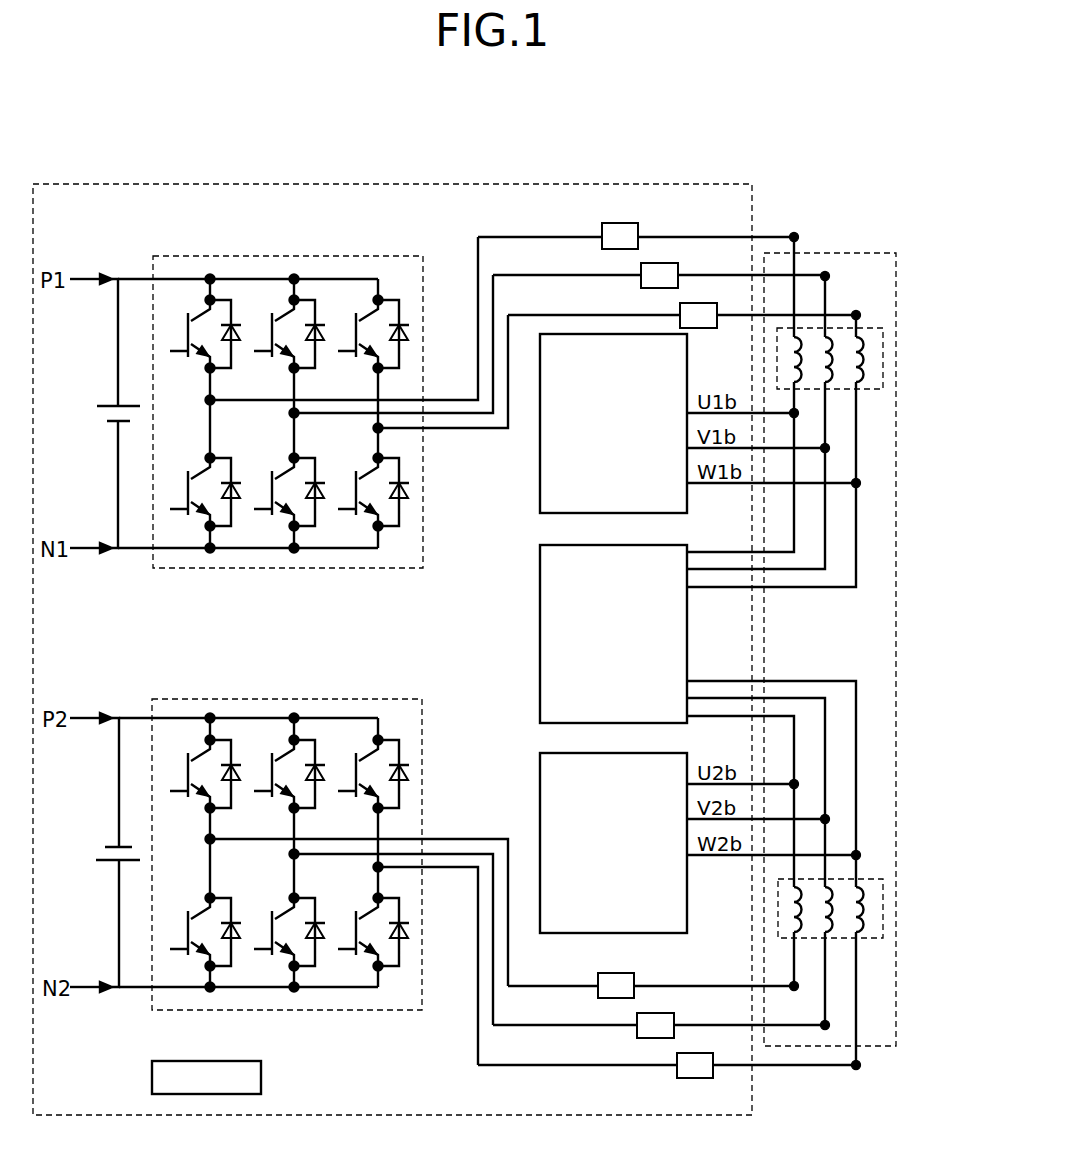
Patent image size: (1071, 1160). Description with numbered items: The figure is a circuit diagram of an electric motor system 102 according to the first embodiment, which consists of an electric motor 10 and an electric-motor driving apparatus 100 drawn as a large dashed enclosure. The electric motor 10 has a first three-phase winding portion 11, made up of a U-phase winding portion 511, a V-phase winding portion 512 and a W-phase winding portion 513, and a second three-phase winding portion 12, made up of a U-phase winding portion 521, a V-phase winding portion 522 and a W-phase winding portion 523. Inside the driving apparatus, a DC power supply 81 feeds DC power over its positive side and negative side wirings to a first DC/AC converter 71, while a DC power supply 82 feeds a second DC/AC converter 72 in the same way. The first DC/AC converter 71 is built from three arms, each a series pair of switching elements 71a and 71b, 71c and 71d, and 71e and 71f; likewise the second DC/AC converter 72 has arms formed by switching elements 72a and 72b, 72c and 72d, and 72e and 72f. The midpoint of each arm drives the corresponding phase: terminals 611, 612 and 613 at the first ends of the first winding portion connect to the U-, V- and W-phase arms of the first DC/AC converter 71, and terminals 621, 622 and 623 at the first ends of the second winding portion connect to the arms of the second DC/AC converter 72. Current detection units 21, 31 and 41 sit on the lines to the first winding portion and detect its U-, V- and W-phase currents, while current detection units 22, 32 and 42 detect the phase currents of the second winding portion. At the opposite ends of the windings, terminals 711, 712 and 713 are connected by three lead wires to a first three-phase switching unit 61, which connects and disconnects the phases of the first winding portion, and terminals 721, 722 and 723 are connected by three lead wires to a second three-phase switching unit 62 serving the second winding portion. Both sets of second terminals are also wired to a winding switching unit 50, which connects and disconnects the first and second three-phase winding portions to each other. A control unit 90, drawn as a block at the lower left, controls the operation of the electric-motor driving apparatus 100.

The electric-motor driving apparatus 100 is at (400, 184).
The electric motor system 102 is at (806, 170).
The electric motor 10 is at (879, 252).
The first three-phase winding portion 11 is at (880, 327).
The second three-phase winding portion 12 is at (882, 940).
The current detection unit 21 is at (627, 223).
The current detection unit 31 is at (664, 263).
The current detection unit 41 is at (703, 303).
The current detection unit 22 is at (622, 973).
The current detection unit 32 is at (660, 1013).
The current detection unit 42 is at (700, 1053).
The winding switching unit 50 is at (540, 630).
The first three-phase switching unit 61 is at (540, 460).
The second three-phase switching unit 62 is at (540, 786).
The first DC/AC converter 71 is at (178, 255).
The switching element 71a is at (232, 298).
The switching element 71b is at (231, 528).
The switching element 71c is at (316, 298).
The switching element 71d is at (315, 528).
The switching element 71e is at (400, 298).
The switching element 71f is at (399, 528).
The second DC/AC converter 72 is at (178, 698).
The switching element 72a is at (232, 738).
The switching element 72b is at (231, 967).
The switching element 72c is at (316, 738).
The switching element 72d is at (315, 967).
The switching element 72e is at (400, 738).
The switching element 72f is at (399, 967).
The DC power supply 81 is at (113, 423).
The DC power supply 82 is at (113, 845).
The control unit 90 is at (152, 1078).
The U-phase winding portion 511 is at (805, 375).
The V-phase winding portion 512 is at (838, 370).
The W-phase winding portion 513 is at (870, 352).
The U-phase winding portion 521 is at (805, 934).
The V-phase winding portion 522 is at (830, 882).
The W-phase winding portion 523 is at (870, 912).
The terminal 611 is at (794, 233).
The terminal 612 is at (825, 272).
The terminal 613 is at (856, 311).
The terminal 621 is at (794, 986).
The terminal 622 is at (825, 1025).
The terminal 623 is at (856, 1065).
The terminal 711 is at (794, 413).
The terminal 712 is at (825, 448).
The terminal 713 is at (856, 483).
The terminal 721 is at (794, 784).
The terminal 722 is at (825, 819).
The terminal 723 is at (856, 855).